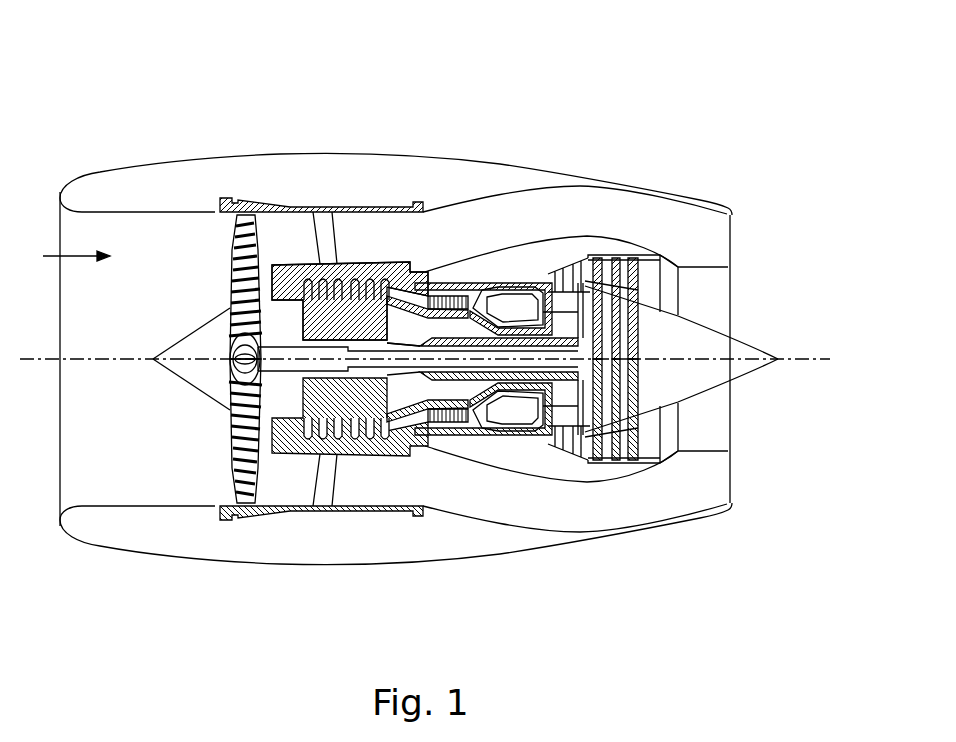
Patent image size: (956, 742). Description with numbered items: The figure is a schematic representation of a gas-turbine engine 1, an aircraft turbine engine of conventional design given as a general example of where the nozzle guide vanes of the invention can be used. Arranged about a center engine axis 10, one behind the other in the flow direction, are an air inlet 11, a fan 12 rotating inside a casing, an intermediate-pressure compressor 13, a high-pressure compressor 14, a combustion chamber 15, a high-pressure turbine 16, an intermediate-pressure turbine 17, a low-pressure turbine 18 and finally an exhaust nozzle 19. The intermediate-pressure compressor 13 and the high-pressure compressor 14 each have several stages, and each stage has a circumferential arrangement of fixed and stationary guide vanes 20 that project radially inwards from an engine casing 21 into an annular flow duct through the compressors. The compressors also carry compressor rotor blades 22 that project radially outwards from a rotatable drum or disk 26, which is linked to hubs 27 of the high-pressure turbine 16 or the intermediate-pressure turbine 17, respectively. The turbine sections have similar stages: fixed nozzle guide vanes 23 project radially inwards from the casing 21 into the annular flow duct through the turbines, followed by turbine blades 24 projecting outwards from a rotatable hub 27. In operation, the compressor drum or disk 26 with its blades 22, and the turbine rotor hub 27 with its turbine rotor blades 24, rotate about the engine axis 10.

The gas-turbine engine 1 is at (453, 100).
The center engine axis 10 is at (68, 362).
The air inlet 11 is at (188, 266).
The fan 12 is at (247, 207).
The intermediate-pressure compressor 13 is at (347, 310).
The high-pressure compressor 14 is at (465, 294).
The combustion chamber 15 is at (522, 298).
The high-pressure turbine 16 is at (545, 278).
The intermediate-pressure turbine 17 is at (583, 285).
The low-pressure turbine 18 is at (645, 258).
The exhaust nozzle 19 is at (670, 293).
The guide vanes 20 is at (300, 450).
The engine casing 21 is at (362, 455).
The compressor rotor blades 22 is at (364, 442).
The nozzle guide vanes 23 is at (585, 470).
The turbine blades 24 is at (612, 463).
The rotatable drum or disk 26 is at (470, 425).
The hub 27 is at (640, 407).